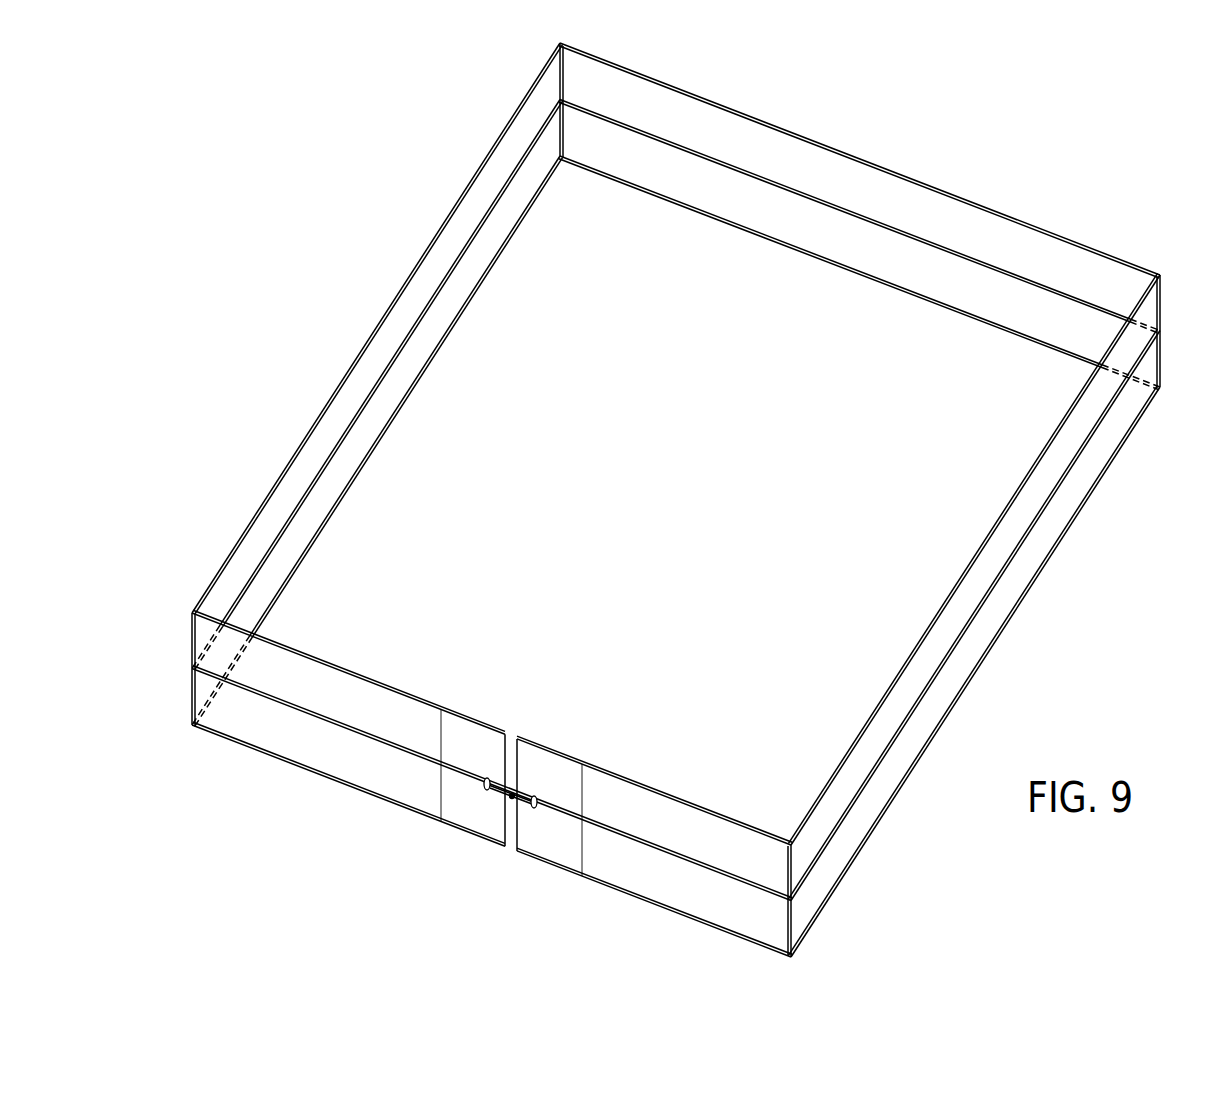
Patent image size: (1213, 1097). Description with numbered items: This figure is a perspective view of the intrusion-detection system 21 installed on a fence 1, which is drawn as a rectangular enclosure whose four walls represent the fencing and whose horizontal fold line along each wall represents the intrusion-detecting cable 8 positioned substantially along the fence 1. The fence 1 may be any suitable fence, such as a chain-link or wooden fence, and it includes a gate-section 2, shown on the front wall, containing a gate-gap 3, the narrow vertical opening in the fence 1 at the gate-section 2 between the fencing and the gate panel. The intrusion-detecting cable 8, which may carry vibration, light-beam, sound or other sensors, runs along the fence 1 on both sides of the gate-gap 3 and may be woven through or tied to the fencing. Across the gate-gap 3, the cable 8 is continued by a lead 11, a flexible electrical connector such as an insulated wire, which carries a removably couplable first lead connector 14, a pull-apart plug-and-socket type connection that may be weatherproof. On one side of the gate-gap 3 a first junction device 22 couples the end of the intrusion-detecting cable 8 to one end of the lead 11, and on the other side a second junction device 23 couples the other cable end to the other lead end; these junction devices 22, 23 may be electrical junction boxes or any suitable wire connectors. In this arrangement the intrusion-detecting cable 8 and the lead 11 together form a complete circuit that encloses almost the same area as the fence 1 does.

The fence 1 is at (305, 424).
The gate-section 2 is at (583, 719).
The gate-gap 3 is at (503, 861).
The intrusion-detecting cable 8 is at (879, 212).
The lead 11 is at (510, 782).
The first lead connector 14 is at (511, 798).
The intrusion-detection system 21 is at (270, 255).
The first junction device 22 is at (487, 778).
The second junction device 23 is at (535, 796).